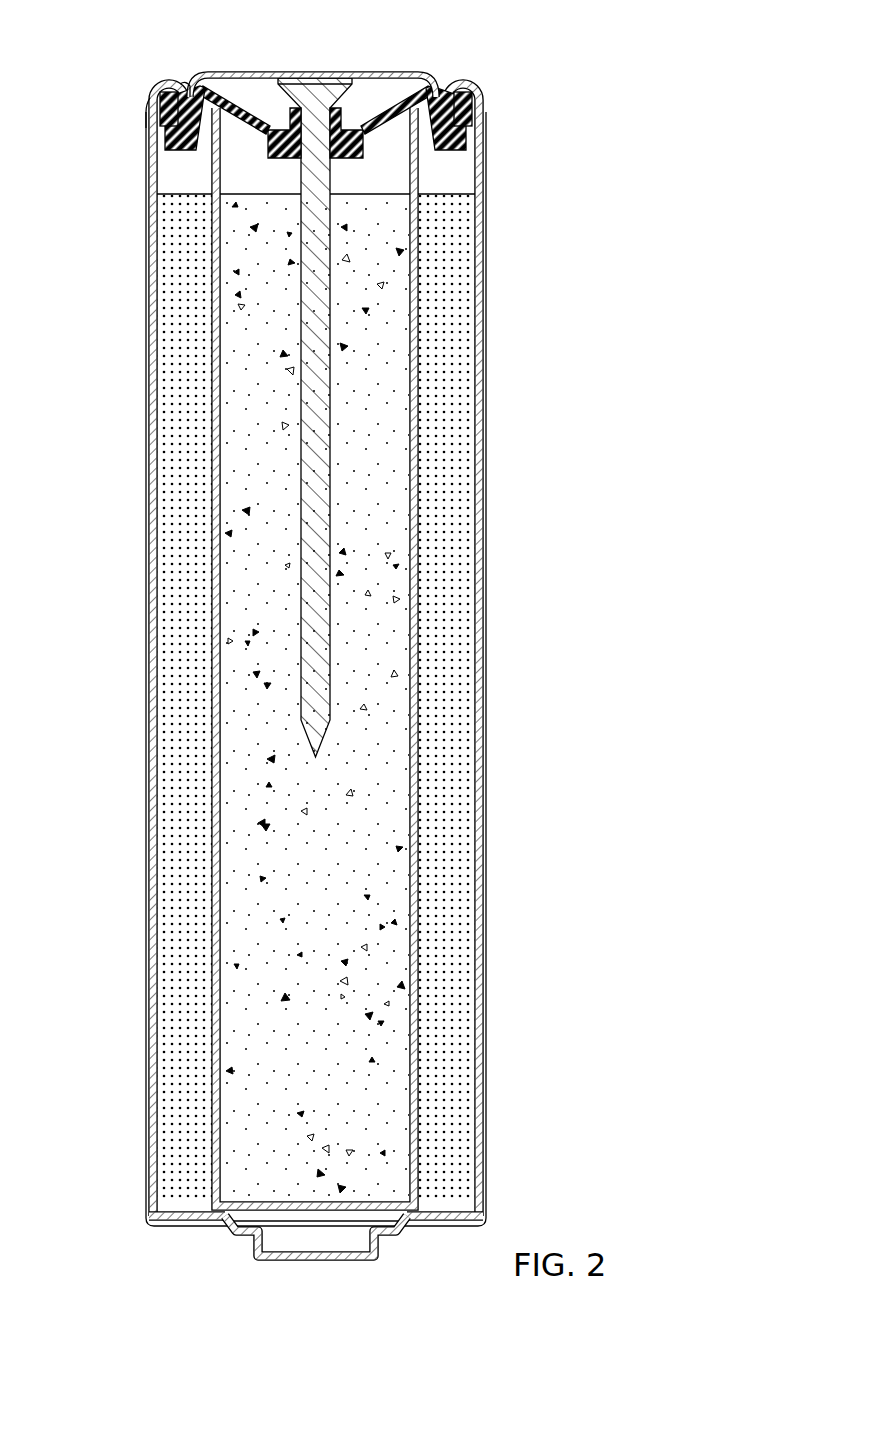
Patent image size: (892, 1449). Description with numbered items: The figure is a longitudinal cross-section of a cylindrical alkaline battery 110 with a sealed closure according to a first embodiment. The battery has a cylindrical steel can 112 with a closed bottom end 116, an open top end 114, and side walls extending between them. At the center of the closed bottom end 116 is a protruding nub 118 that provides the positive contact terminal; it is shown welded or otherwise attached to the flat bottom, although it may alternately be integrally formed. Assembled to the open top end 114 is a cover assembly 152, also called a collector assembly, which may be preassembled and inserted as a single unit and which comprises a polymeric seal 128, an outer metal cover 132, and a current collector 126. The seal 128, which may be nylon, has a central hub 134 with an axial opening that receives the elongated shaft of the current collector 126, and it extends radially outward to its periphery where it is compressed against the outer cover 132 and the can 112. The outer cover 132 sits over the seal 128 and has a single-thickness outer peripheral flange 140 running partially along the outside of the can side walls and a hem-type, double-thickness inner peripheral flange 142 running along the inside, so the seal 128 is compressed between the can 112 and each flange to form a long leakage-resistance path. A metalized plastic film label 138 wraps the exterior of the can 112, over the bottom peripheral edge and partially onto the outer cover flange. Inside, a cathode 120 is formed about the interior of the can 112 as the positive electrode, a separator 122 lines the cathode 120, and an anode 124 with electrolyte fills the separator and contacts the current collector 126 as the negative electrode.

The cylindrical alkaline battery 110 is at (585, 153).
The cylindrical steel can 112 is at (482, 447).
The open top end 114 is at (470, 60).
The closed bottom end 116 is at (337, 1222).
The protruding nub 118 is at (298, 1262).
The cathode 120 is at (450, 790).
The separator 122 is at (415, 703).
The anode 124 is at (390, 590).
The current collector 126 is at (325, 322).
The polymeric seal 128 is at (222, 86).
The outer metal cover 132 is at (340, 72).
The central hub 134 is at (272, 122).
The metalized plastic film label 138 is at (483, 910).
The outer peripheral flange 140 is at (155, 93).
The inner peripheral flange 142 is at (185, 85).
The cover assembly 152 is at (162, 68).